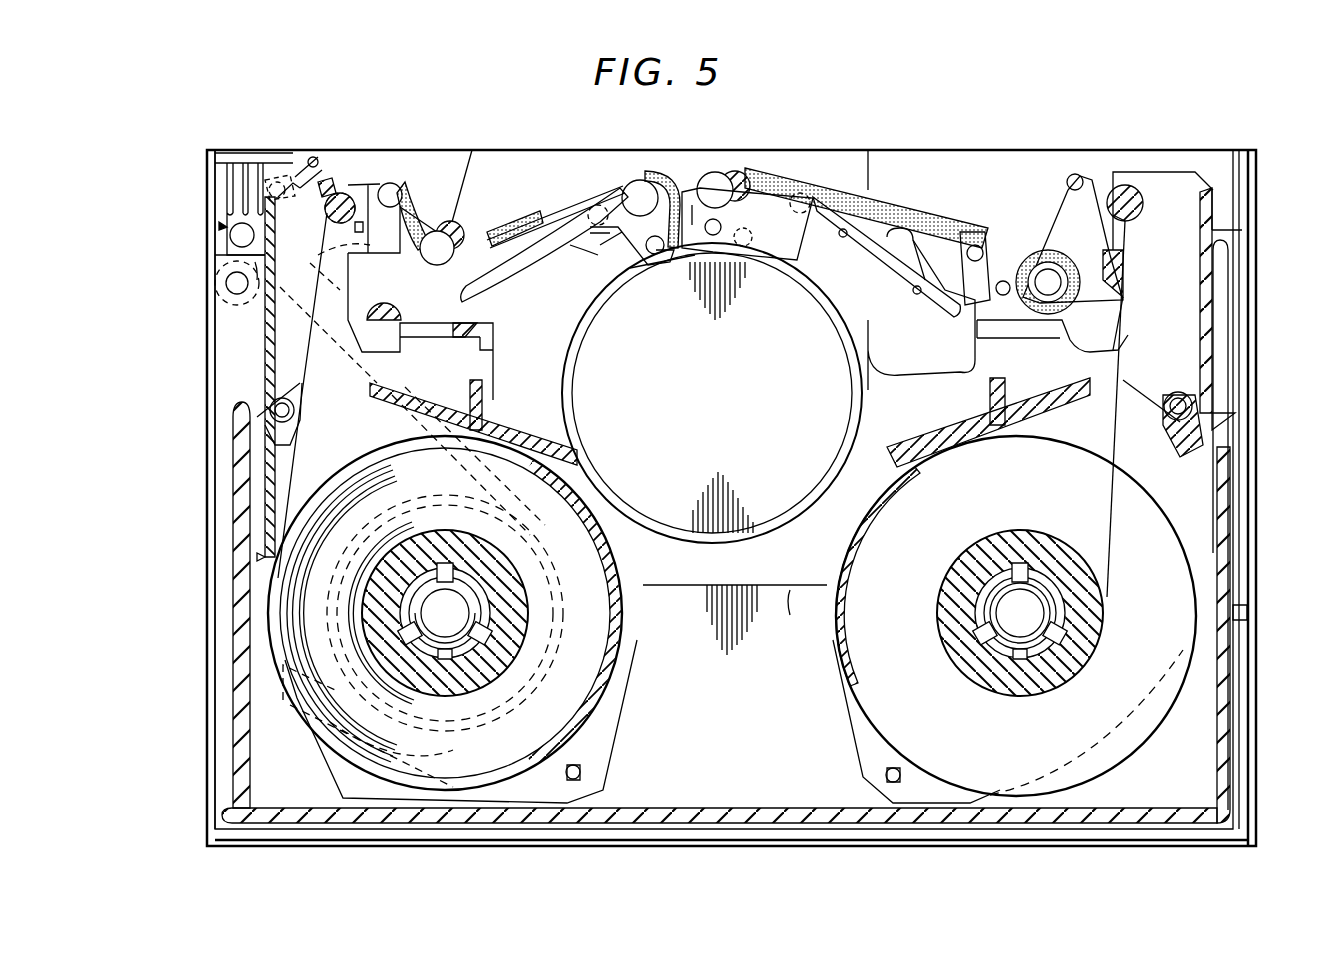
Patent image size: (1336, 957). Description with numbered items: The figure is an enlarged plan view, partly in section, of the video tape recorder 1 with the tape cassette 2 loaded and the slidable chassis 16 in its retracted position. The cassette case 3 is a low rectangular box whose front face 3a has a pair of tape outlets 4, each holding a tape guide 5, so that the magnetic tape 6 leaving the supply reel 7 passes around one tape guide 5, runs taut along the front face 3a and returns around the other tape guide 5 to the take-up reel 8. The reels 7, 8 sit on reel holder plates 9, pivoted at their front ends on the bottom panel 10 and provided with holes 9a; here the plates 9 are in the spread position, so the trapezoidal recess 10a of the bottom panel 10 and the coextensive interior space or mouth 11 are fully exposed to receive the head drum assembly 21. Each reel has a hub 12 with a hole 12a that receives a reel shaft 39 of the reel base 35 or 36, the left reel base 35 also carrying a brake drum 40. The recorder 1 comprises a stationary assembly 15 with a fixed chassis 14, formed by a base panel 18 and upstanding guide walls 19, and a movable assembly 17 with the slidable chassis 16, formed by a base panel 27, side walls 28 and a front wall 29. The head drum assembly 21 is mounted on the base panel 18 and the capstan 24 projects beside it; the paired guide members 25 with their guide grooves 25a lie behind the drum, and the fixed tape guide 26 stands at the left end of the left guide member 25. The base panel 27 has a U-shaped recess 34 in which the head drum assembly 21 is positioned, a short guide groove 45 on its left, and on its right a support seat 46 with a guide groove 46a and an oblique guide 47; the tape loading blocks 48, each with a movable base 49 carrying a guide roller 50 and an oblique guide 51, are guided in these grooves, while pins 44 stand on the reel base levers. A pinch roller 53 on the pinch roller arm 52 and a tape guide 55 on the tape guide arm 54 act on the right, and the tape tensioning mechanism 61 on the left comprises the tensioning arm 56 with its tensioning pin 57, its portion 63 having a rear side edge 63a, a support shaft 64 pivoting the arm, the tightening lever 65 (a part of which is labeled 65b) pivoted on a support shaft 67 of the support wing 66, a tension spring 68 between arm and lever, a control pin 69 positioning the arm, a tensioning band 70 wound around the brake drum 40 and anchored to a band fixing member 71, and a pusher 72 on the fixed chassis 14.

The video tape recorder 1 is at (1262, 250).
The tape cassette 2 is at (1237, 670).
The cassette case 3 is at (1230, 730).
The front face 3a is at (1160, 170).
The tape outlets 4 is at (346, 192).
The tape guides 5 is at (345, 190).
The magnetic tape 6 is at (441, 230).
The tape reel 7 is at (340, 735).
The tape reel 8 is at (1115, 765).
The reel holder plates 9 is at (605, 742).
The holes 9a is at (582, 775).
The bottom panel 10 is at (718, 823).
The recess 10a is at (678, 583).
The interior space 11 is at (786, 585).
The hubs 12 is at (490, 548).
The holes 12a is at (485, 612).
The fixed chassis 14 is at (980, 160).
The stationary assembly 15 is at (907, 148).
The slidable chassis 16 is at (1250, 498).
The movable assembly 17 is at (1255, 565).
The base panel 18 is at (1038, 172).
The guide walls 19 is at (1240, 362).
The head drum assembly 21 is at (782, 490).
The capstan 24 is at (1025, 333).
The guide member 25 is at (512, 190).
The guide groove 25a is at (572, 235).
The fixed tape guide 26 is at (416, 303).
The base panel 27 is at (225, 372).
The side walls 28 is at (235, 475).
The front wall 29 is at (1075, 846).
The recess 34 is at (857, 420).
The reel base 35 is at (410, 560).
The reel base 36 is at (1038, 585).
The reel shafts 39 is at (443, 572).
The brake drum 40 is at (385, 495).
The pins 44 is at (570, 782).
The guide groove 45 is at (495, 290).
The support seat 46 is at (945, 352).
The guide groove 46a is at (915, 295).
The oblique guide 47 is at (983, 250).
The tape loading block 48 is at (635, 268).
The movable base 49 is at (625, 262).
The guide roller 50 is at (643, 195).
The oblique guide 51 is at (660, 258).
The pinch roller arm 52 is at (1120, 290).
The pinch roller 53 is at (1058, 262).
The tape guide arm 54 is at (1092, 188).
The tape guide 55 is at (1066, 182).
The tensioning arm 56 is at (395, 252).
The tensioning pin 57 is at (398, 185).
The tape tensioning mechanism 61 is at (229, 235).
The portion 63 is at (372, 300).
The rear side edge 63a is at (215, 292).
The support shaft 64 is at (237, 294).
The tightening lever 65 is at (305, 172).
The lever end 65b is at (268, 208).
The support wing 66 is at (240, 165).
The support shaft 67 is at (277, 180).
The tension spring 68 is at (327, 182).
The control pin 69 is at (248, 258).
The tensioning band 70 is at (405, 424).
The band fixing member 71 is at (286, 722).
The pusher 72 is at (238, 178).